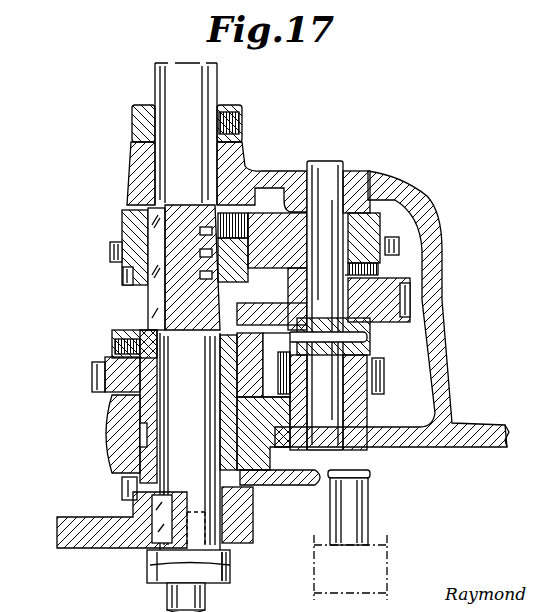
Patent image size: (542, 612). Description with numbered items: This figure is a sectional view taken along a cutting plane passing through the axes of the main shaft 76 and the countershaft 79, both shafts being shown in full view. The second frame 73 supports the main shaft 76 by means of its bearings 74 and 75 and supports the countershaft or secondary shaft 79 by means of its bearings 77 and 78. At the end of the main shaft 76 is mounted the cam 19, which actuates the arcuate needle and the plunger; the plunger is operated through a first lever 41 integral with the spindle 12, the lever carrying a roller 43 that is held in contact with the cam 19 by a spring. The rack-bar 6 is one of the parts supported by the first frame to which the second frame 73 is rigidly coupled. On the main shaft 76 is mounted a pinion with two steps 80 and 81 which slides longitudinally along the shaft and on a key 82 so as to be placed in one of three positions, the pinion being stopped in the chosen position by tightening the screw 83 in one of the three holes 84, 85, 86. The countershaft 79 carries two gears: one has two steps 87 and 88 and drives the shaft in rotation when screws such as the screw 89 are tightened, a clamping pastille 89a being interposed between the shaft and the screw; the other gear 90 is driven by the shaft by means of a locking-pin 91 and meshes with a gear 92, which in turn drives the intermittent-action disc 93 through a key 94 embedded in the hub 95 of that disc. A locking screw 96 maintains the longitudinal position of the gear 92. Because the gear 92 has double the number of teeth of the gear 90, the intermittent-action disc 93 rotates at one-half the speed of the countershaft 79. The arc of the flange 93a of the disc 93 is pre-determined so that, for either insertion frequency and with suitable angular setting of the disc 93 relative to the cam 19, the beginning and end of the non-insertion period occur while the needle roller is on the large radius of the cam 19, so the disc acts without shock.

The main shaft 76 is at (157, 77).
The bearing 75 is at (130, 162).
The screw 83 is at (242, 205).
The key 82 is at (152, 222).
The hole 85 is at (208, 253).
The hole 86 is at (208, 275).
The hole 84 is at (232, 230).
The pinion step 80 is at (112, 247).
The pinion step 81 is at (124, 277).
The countershaft 79 is at (322, 167).
The bearing 78 is at (363, 176).
The second frame 73 is at (478, 442).
The bearing 77 is at (362, 432).
The gear step 87 is at (398, 245).
The clamping pastille 89a is at (352, 270).
The screw 89 is at (380, 270).
The gear step 88 is at (404, 311).
The locking-pin 91 is at (369, 337).
The gear 90 is at (386, 372).
The key 94 is at (232, 349).
The locking screw 96 is at (118, 347).
The gear 92 is at (94, 372).
The bearing 74 is at (120, 417).
The hub 95 is at (140, 445).
The flange 93a is at (124, 492).
The cam 19 is at (57, 531).
The intermittent-action disc 93 is at (283, 486).
The roller 43 is at (226, 558).
The first lever 41 is at (224, 570).
The spindle 12 is at (167, 598).
The rack-bar 6 is at (378, 565).